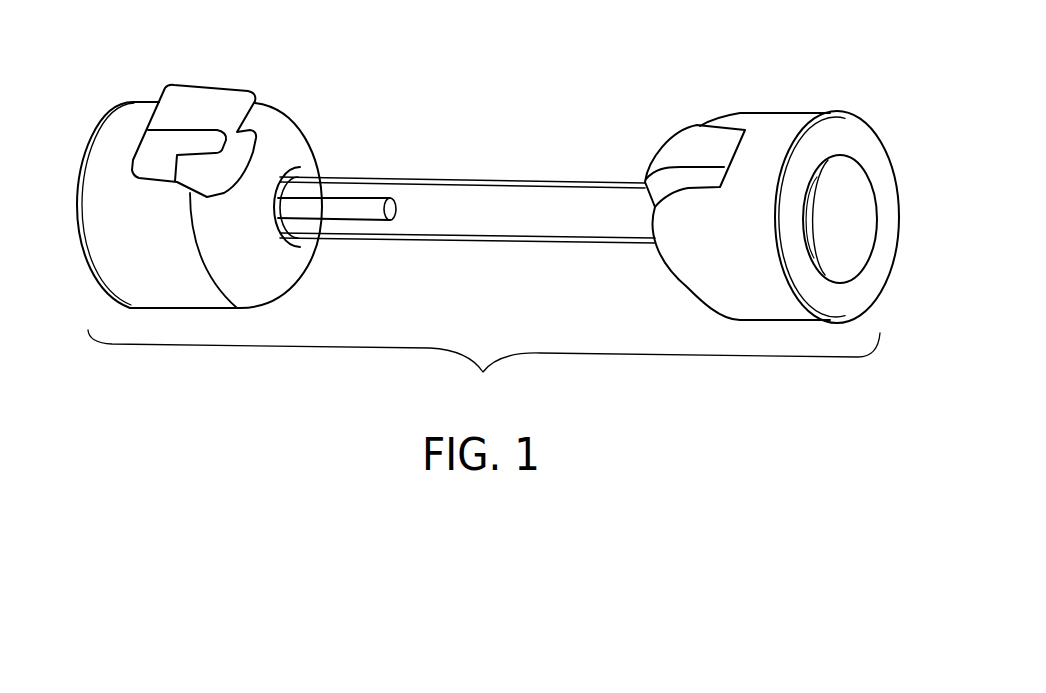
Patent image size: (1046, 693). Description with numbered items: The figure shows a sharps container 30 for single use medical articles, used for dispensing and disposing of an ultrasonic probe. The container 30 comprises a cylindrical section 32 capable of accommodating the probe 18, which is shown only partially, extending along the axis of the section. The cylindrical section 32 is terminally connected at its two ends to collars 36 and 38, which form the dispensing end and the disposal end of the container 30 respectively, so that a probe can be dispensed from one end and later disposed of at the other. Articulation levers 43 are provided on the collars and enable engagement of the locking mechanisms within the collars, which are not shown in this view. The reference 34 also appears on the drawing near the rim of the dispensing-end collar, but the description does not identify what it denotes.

The probe 18 is at (362, 198).
The sharps container 30 is at (484, 368).
The cylindrical section 32 is at (513, 178).
The right body / rim 34 is at (820, 112).
The collar 36 is at (898, 200).
The collar 38 is at (87, 146).
The articulation lever 43 is at (220, 84).